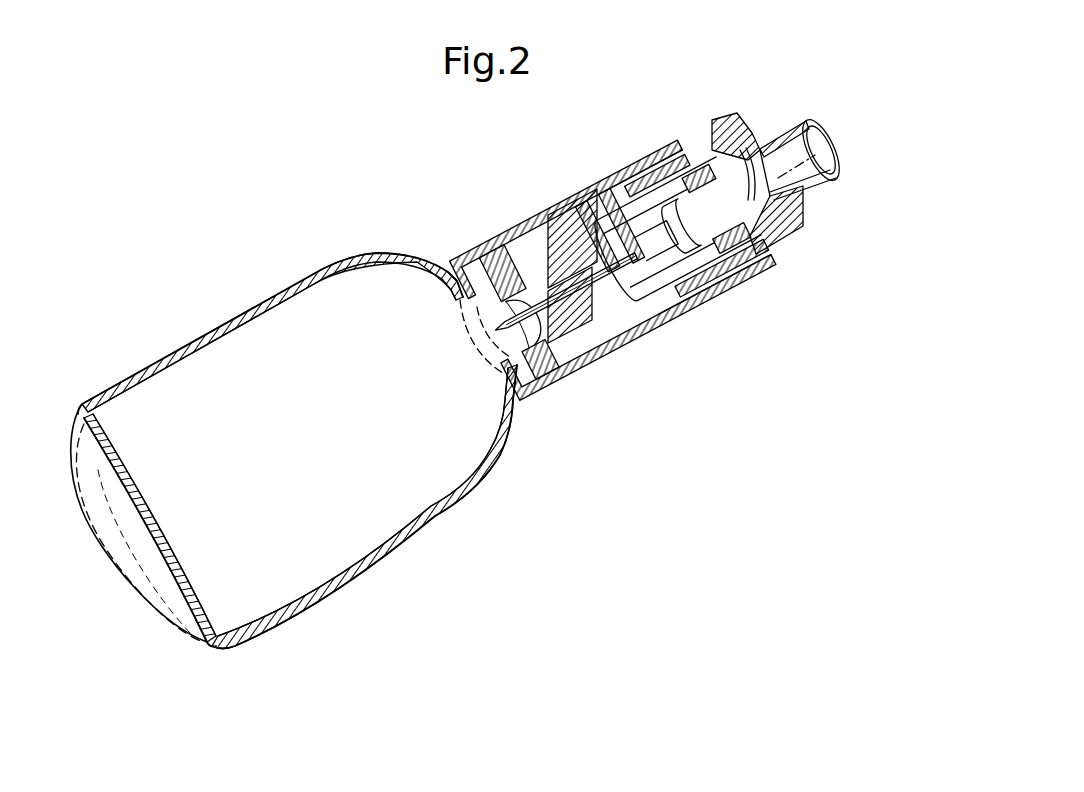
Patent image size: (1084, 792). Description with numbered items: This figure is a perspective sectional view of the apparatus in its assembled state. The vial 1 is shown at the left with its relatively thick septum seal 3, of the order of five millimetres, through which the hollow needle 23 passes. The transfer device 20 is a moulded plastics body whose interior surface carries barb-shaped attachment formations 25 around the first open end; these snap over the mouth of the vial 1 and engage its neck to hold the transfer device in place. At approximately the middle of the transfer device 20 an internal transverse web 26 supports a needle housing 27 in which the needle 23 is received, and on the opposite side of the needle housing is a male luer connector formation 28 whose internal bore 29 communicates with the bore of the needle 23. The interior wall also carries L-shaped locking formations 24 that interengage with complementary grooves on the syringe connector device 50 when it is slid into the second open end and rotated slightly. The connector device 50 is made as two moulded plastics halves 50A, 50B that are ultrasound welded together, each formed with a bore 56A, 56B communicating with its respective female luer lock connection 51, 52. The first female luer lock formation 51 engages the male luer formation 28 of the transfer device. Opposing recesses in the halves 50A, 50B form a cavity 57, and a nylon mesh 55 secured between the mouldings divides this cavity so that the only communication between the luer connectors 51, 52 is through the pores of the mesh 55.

The vial 1 is at (158, 332).
The septum seal 3 is at (562, 330).
The transfer device 20 is at (505, 223).
The needle 23 is at (533, 368).
The locking formations 24 is at (617, 233).
The attachment formations 25 is at (477, 270).
The internal transverse web 26 is at (570, 232).
The needle housing 27 is at (602, 307).
The male luer connector formation 28 is at (684, 232).
The internal bore 29 is at (603, 228).
The syringe connector device 50 is at (798, 180).
The first moulded plastics half 50A is at (758, 267).
The second moulded plastics half 50B is at (725, 135).
The first female luer lock connection 51 is at (655, 287).
The second female luer lock connection 52 is at (793, 120).
The nylon mesh 55 is at (700, 175).
The bore of first half 56A is at (717, 290).
The bore of second half 56B is at (800, 178).
The cavity 57 is at (750, 157).